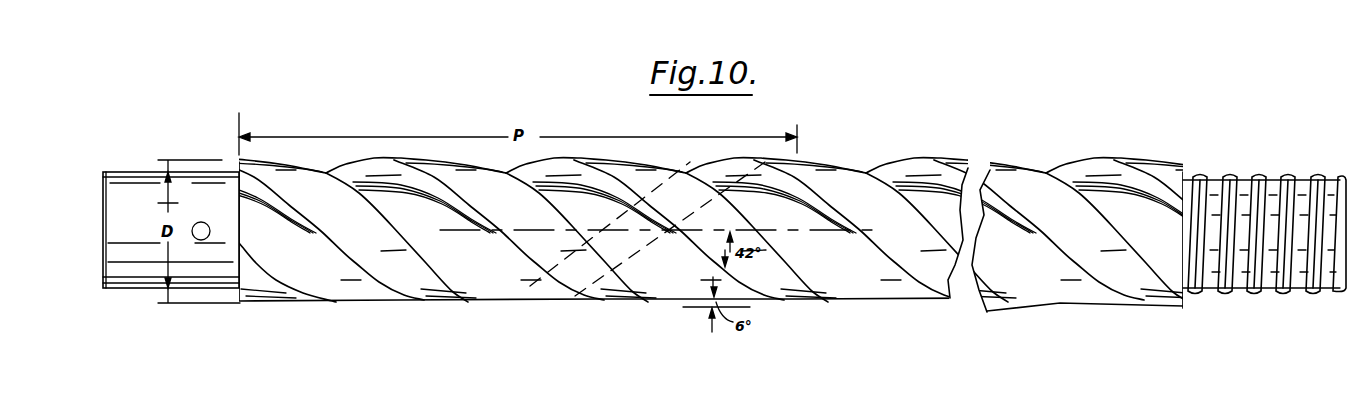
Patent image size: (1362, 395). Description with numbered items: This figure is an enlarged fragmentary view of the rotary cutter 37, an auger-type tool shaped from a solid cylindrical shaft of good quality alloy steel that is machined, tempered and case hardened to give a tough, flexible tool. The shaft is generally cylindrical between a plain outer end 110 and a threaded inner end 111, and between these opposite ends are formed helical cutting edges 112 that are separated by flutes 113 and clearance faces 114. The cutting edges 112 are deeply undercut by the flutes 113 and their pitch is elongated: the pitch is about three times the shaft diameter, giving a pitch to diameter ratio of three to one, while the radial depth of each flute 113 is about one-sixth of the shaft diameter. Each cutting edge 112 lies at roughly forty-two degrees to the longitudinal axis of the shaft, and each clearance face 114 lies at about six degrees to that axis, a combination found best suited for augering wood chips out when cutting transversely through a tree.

The cutter 37 is at (847, 185).
The plain outer end 110 is at (138, 192).
The threaded inner end 111 is at (1257, 180).
The helical cutting edges 112 is at (963, 170).
The flutes 113 is at (998, 197).
The clearance faces 114 is at (1027, 258).